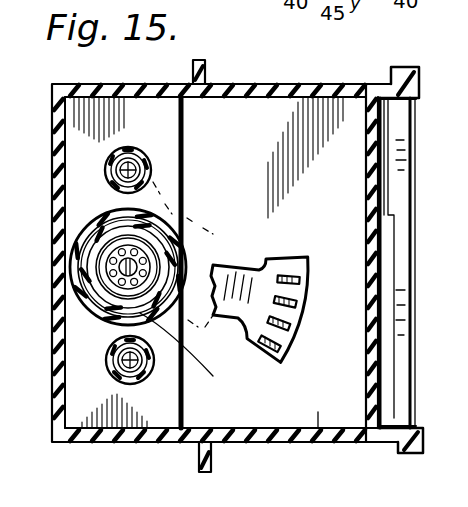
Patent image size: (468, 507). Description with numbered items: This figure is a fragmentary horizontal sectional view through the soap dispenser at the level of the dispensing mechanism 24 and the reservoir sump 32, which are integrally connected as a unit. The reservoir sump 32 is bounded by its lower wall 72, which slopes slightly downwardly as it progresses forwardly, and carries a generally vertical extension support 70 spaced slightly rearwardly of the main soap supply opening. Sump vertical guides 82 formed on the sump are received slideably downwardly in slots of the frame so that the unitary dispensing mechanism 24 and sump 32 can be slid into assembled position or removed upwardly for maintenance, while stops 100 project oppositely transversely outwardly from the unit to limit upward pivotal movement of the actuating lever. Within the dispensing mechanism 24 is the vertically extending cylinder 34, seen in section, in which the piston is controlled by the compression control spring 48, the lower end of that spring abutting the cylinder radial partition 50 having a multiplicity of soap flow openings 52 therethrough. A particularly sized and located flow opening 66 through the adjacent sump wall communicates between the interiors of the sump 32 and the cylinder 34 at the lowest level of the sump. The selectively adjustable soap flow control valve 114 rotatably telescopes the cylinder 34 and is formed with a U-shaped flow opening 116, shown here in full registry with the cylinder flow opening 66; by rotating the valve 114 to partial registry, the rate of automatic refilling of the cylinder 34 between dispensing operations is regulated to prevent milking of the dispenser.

The soap dispensing mechanism 24 is at (80, 85).
The stops 100 is at (206, 62).
The sump vertical guides 82 is at (405, 66).
The vertical extension support 70 is at (378, 130).
The reservoir sump 32 is at (238, 145).
The lower wall of the sump 72 is at (318, 430).
The cylinder or nozzle 34 is at (184, 222).
The soap flow openings 52 is at (124, 236).
The compression control spring 48 is at (112, 316).
The flow opening 66 is at (186, 256).
The U-shaped flow opening 116 is at (213, 267).
The soap flow control valve 114 is at (238, 320).
The cylinder radial partition 50 is at (192, 346).